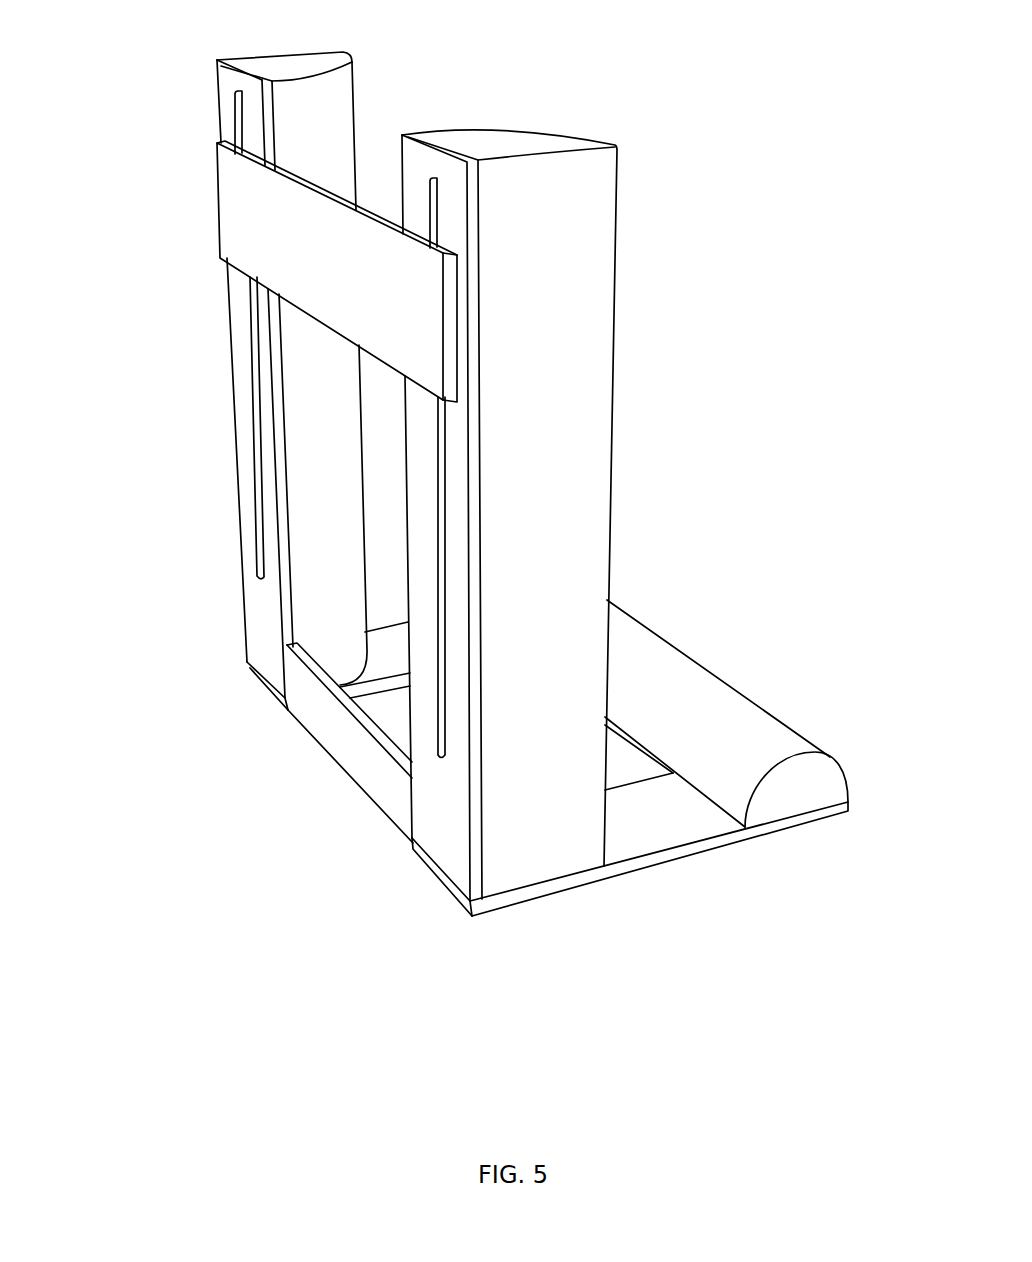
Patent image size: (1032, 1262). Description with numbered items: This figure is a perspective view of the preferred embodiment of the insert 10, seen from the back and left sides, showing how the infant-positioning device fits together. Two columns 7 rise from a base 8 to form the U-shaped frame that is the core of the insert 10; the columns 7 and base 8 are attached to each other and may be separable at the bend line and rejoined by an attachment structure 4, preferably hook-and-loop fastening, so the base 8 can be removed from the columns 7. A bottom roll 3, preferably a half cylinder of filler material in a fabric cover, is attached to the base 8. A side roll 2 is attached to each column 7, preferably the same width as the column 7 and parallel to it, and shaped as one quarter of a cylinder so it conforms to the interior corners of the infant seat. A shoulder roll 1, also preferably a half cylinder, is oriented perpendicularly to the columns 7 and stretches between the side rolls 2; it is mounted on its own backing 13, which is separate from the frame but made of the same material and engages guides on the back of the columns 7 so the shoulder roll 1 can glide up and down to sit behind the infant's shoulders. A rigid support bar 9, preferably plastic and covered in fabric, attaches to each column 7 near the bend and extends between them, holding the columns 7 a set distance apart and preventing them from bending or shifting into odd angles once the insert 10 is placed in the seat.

The insert 10 is at (175, 82).
The shoulder roll 1 is at (377, 202).
The side roll 2 is at (567, 135).
The bottom roll 3 is at (830, 753).
The attachment structure 4 is at (477, 907).
The column 7 is at (232, 400).
The base 8 is at (745, 843).
The support bar 9 is at (333, 748).
The backing 13 is at (218, 180).